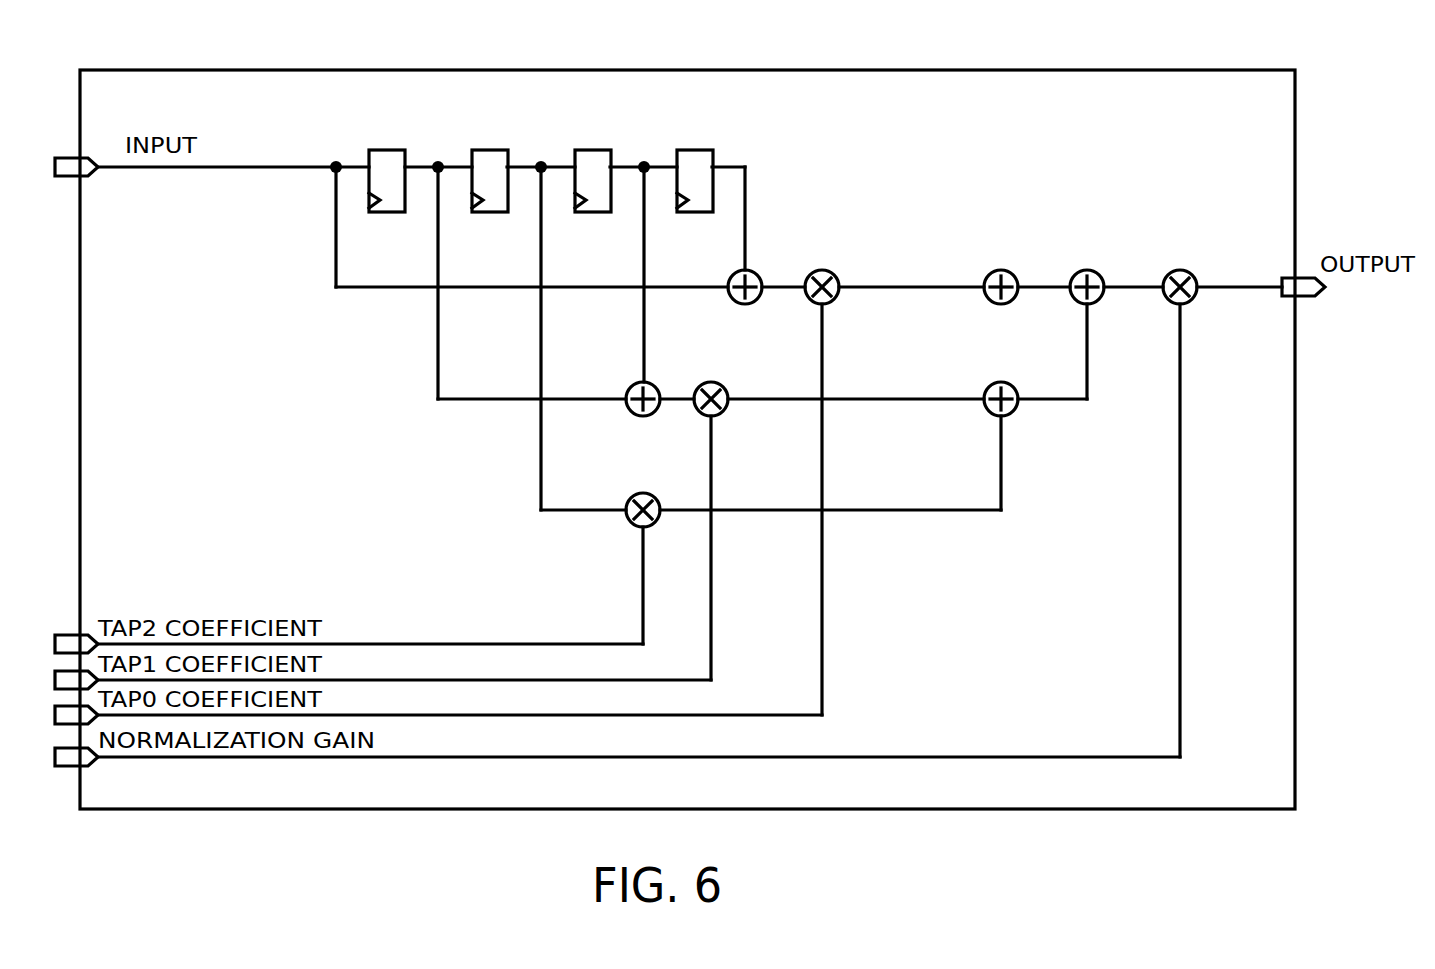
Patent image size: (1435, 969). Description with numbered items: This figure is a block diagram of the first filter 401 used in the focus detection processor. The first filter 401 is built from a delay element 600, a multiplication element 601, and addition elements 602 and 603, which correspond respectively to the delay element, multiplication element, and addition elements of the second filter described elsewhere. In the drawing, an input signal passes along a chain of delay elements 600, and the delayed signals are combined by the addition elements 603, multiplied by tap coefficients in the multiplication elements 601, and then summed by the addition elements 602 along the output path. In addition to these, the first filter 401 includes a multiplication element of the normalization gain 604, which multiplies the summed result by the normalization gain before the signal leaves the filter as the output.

The first filter 401 is at (1160, 70).
The delay element 600 is at (382, 150).
The multiplication element 601 is at (819, 272).
The addition element 602 is at (1006, 272).
The addition element 603 is at (751, 272).
The multiplication element of the normalization gain 604 is at (1184, 272).